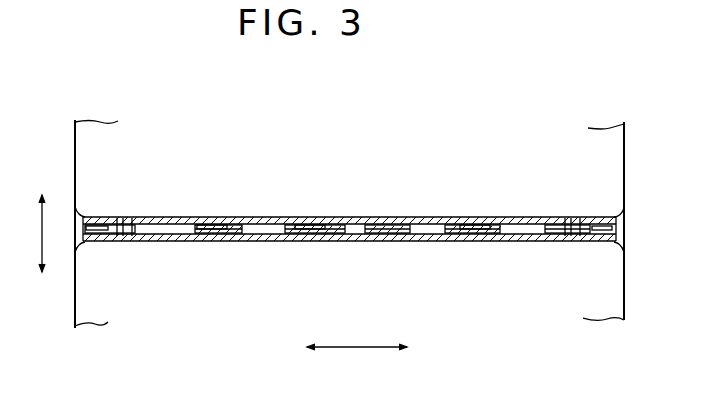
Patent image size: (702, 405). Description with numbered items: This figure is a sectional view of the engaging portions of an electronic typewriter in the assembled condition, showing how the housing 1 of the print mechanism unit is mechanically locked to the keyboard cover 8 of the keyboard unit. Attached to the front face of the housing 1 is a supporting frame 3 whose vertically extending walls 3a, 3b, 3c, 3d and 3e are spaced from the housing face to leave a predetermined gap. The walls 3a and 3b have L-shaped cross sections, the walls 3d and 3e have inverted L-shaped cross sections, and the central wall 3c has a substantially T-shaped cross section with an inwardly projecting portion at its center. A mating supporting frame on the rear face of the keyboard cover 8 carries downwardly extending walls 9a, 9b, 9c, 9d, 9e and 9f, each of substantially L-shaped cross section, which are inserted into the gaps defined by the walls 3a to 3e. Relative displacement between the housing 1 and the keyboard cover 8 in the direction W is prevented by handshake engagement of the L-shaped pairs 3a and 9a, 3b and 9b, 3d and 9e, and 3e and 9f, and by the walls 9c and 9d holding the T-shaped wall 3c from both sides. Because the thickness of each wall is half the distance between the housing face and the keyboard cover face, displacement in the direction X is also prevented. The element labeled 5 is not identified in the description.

The housing 1 is at (75, 146).
The keyboard cover 8 is at (75, 300).
The supporting frame 3 is at (167, 242).
The wall 3a is at (106, 242).
The wall 3b is at (218, 242).
The central wall 3c is at (345, 242).
The wall 3d is at (476, 243).
The wall 3e is at (583, 242).
The fastening member 5 is at (132, 217).
The wall 9a is at (93, 217).
The wall 9b is at (213, 217).
The wall 9c is at (311, 217).
The wall 9d is at (381, 217).
The wall 9e is at (477, 217).
The wall 9f is at (600, 217).
The direction X is at (42, 234).
The direction W is at (355, 348).